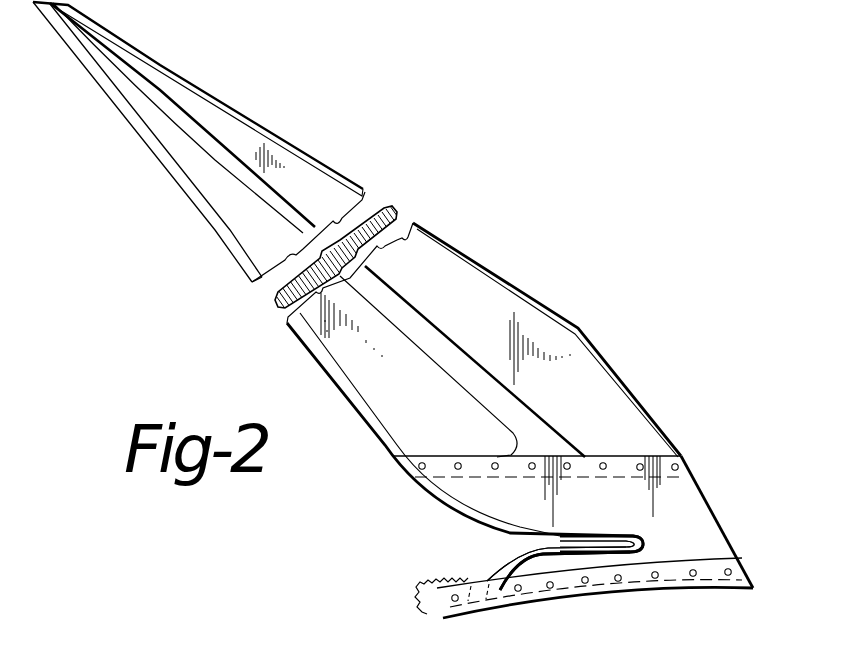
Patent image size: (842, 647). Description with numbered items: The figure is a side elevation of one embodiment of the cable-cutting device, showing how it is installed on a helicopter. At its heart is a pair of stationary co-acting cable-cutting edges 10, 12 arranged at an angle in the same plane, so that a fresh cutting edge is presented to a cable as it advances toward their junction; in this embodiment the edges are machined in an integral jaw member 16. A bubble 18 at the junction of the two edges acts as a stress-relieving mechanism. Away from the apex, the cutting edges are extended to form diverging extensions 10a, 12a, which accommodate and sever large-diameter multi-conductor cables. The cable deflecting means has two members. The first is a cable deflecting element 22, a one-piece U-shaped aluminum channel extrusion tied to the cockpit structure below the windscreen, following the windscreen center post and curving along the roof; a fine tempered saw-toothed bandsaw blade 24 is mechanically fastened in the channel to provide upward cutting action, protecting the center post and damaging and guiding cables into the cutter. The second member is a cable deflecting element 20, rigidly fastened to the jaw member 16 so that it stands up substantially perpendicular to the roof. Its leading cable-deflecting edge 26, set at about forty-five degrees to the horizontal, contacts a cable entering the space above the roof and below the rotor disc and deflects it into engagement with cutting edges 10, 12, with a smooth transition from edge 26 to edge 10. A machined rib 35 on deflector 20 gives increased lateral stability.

The cable-cutting edge 10 is at (543, 545).
The diverging extension 10a is at (500, 535).
The cable-cutting edge 12 is at (540, 552).
The diverging extension 12a is at (486, 580).
The jaw member 16 is at (673, 496).
The bubble 18 is at (645, 542).
The cable deflecting element 20 is at (238, 216).
The cable deflecting element 22 is at (443, 603).
The saw-toothed bandsaw blade 24 is at (416, 594).
The leading cable-deflecting edge 26 is at (248, 275).
The machined rib 35 is at (226, 171).